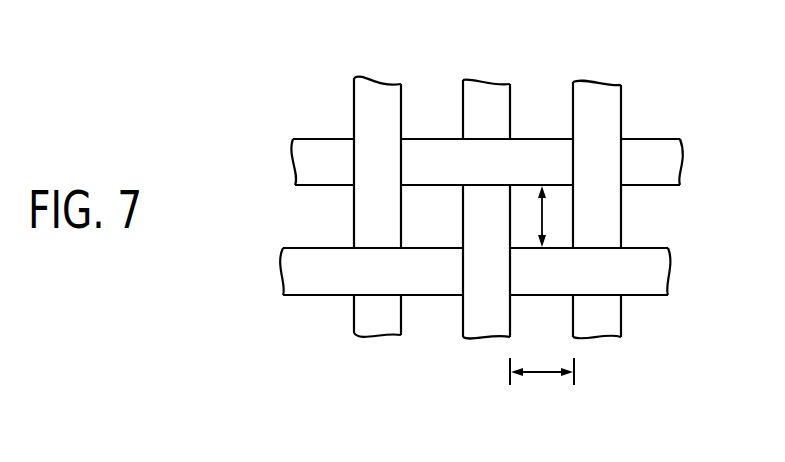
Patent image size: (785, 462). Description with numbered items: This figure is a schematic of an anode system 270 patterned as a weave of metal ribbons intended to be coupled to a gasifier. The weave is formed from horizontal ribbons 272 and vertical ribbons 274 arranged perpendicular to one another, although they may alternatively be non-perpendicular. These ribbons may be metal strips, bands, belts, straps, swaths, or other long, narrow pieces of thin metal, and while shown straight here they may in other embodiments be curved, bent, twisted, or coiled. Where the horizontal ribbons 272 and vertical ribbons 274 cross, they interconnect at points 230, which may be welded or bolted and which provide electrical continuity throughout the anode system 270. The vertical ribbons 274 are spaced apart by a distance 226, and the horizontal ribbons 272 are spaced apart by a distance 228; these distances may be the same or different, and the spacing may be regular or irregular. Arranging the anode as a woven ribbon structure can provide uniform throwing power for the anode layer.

The anode system 270 is at (268, 42).
The vertical ribbons 274 is at (375, 113).
The horizontal ribbons 272 is at (317, 279).
The interconnection points 230 is at (622, 138).
The distance 228 is at (547, 215).
The distance 226 is at (547, 373).